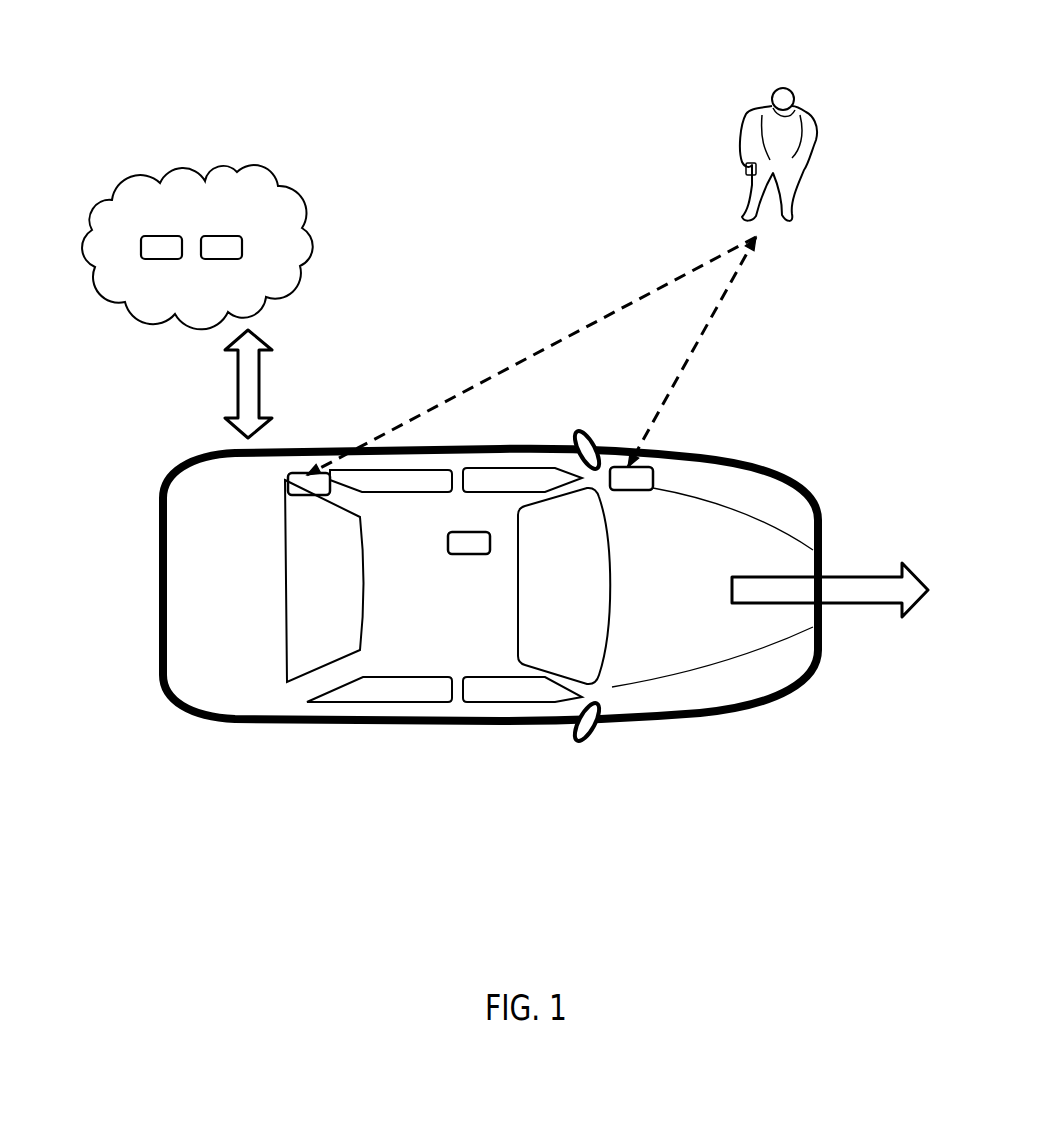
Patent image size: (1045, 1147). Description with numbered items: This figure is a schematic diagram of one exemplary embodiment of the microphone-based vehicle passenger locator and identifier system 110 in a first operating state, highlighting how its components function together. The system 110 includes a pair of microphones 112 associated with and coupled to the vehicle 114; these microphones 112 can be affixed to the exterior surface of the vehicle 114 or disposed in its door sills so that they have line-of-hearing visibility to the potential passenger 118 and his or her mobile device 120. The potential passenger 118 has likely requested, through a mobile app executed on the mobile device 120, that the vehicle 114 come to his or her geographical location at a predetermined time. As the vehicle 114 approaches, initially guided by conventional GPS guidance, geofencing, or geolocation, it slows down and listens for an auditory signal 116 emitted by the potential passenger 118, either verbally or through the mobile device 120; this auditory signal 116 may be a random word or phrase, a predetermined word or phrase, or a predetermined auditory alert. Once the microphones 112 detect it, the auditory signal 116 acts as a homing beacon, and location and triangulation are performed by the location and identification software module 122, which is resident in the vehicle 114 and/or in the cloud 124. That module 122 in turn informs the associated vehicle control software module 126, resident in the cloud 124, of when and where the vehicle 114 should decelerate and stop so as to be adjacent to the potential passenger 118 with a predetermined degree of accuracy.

The vehicle passenger locator and identifier system 110 is at (541, 473).
The microphones 112 is at (653, 467).
The vehicle 114 is at (775, 470).
The auditory signal 116 is at (528, 328).
The potential passenger 118 is at (808, 110).
The mobile device 120 is at (745, 172).
The location and identification software module 122 is at (160, 227).
The cloud 124 is at (277, 177).
The vehicle control software module 126 is at (218, 227).